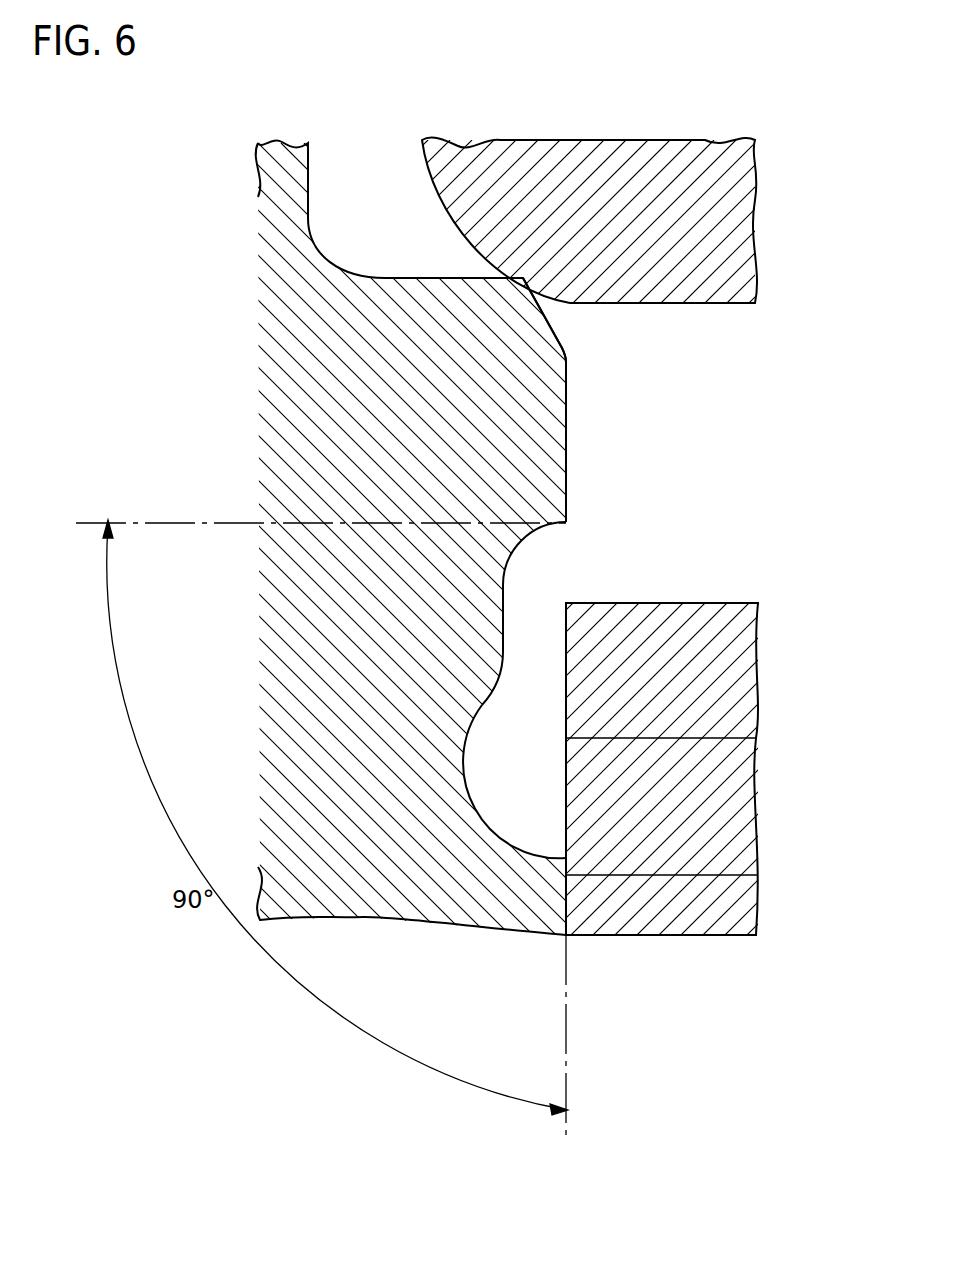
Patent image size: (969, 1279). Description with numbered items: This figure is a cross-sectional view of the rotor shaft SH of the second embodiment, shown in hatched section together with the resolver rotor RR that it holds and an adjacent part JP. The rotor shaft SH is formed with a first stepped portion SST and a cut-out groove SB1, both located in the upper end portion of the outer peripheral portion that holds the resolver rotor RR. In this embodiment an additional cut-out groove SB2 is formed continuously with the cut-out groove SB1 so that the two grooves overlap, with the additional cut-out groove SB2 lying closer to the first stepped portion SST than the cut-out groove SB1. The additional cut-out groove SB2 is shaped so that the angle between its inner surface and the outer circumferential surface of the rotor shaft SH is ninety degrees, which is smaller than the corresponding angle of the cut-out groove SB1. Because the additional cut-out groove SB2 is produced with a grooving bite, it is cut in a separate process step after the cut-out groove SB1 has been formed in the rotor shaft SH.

The rotor shaft SH is at (262, 236).
The journal portion JP is at (560, 142).
The first stepped portion SST is at (551, 343).
The additional cut-out groove SB2 is at (503, 567).
The cut-out groove SB1 is at (466, 760).
The resolver rotor RR is at (716, 603).